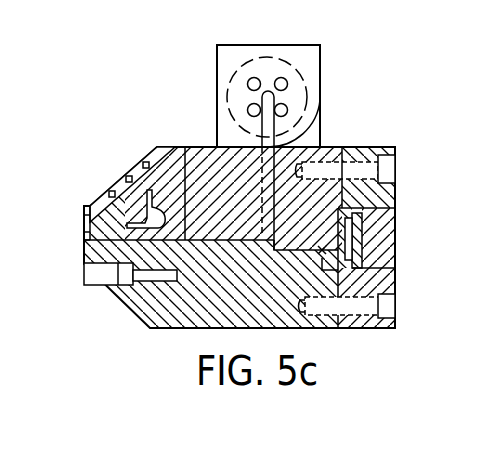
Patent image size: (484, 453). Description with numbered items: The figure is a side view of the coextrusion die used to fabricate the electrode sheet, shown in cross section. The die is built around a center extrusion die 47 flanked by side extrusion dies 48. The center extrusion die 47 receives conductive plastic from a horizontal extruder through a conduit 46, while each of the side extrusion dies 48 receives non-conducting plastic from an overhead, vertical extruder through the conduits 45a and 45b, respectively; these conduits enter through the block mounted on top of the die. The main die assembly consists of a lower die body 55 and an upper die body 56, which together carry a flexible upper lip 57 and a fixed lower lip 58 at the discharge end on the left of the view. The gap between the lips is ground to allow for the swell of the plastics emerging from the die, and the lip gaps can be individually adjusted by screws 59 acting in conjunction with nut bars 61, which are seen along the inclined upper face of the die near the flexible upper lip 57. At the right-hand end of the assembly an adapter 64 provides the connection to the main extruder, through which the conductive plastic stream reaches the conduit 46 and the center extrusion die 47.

The conduit 45a is at (320, 98).
The conduit 45b is at (320, 98).
The conduit 46 is at (338, 278).
The center extrusion die 47 is at (90, 206).
The side extrusion die 48 is at (90, 206).
The lower die body 55 is at (148, 320).
The upper die body 56 is at (314, 150).
The flexible upper lip 57 is at (86, 213).
The fixed lower lip 58 is at (85, 264).
The screw 59 is at (163, 150).
The nut bar 61 is at (136, 182).
The adapter 64 is at (393, 193).